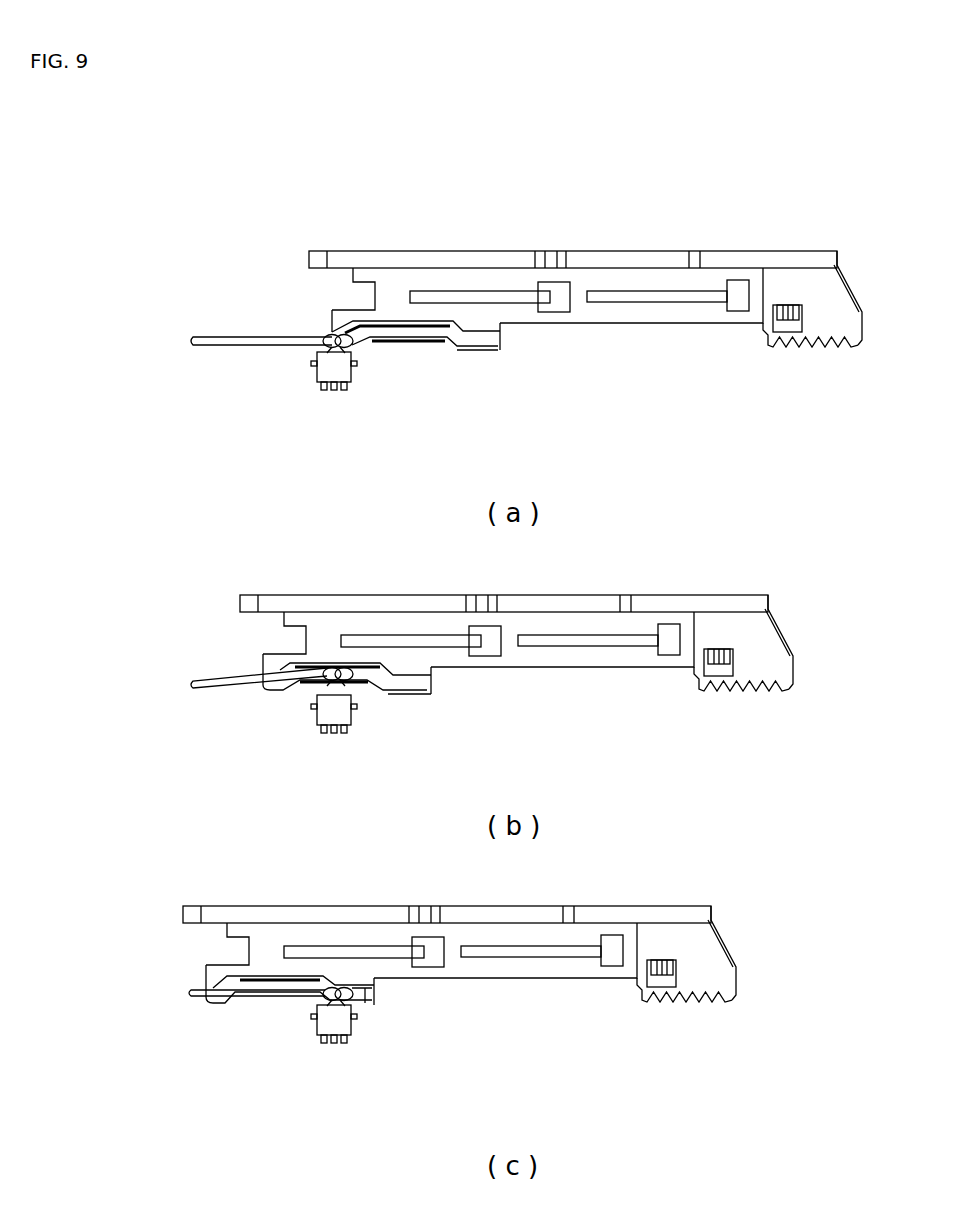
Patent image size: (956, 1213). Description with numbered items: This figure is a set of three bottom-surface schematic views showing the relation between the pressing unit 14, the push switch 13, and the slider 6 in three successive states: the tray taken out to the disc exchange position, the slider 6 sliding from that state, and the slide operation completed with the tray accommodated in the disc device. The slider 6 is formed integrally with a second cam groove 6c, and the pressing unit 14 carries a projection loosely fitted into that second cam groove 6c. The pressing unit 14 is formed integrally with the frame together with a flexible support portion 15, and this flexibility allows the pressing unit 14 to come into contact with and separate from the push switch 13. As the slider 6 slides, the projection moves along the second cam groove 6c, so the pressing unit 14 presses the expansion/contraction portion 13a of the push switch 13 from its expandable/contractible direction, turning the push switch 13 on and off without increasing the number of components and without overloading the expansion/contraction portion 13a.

The slider 6 is at (653, 248).
The second cam groove 6c is at (410, 328).
The push switch 13 is at (323, 372).
The expansion/contraction portion 13a is at (327, 686).
The pressing unit 14 is at (330, 336).
The support portion 15 is at (265, 333).